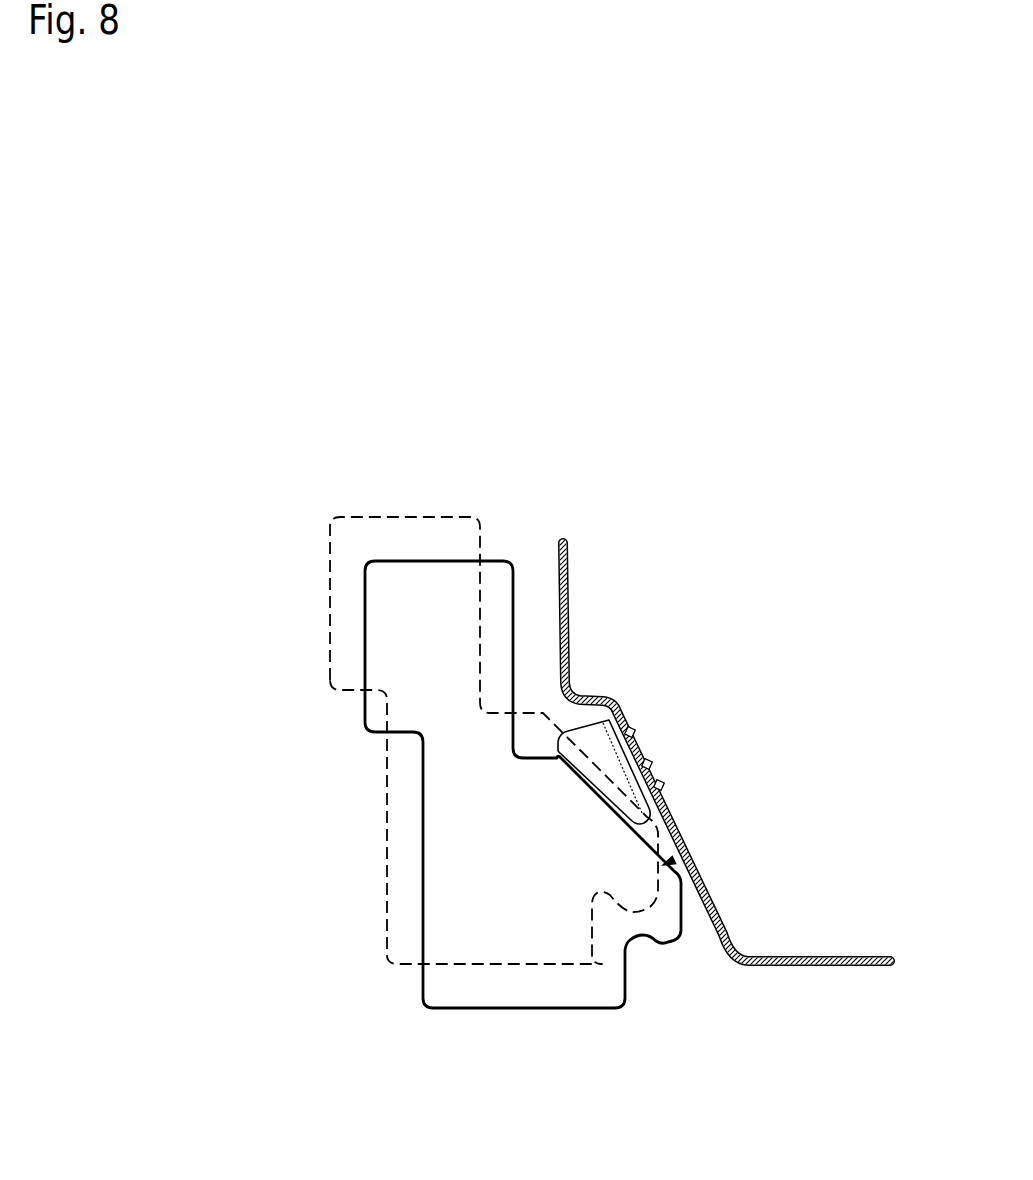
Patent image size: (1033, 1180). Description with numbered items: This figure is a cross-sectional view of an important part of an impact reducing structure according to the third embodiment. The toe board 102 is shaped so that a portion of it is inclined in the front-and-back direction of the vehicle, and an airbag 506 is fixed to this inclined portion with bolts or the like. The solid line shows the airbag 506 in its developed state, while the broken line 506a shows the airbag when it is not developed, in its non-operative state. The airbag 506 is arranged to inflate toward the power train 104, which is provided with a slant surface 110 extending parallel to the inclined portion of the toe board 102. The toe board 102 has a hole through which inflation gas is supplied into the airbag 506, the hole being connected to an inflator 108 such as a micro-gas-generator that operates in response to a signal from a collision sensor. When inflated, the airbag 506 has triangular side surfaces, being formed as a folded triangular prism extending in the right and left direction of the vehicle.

The toe board 102 is at (568, 574).
The power train 104 is at (587, 1002).
The airbag 506 is at (578, 724).
The airbag in non-developed state 506a is at (632, 738).
The inflator 108 is at (660, 789).
The slant surface 110 is at (674, 860).